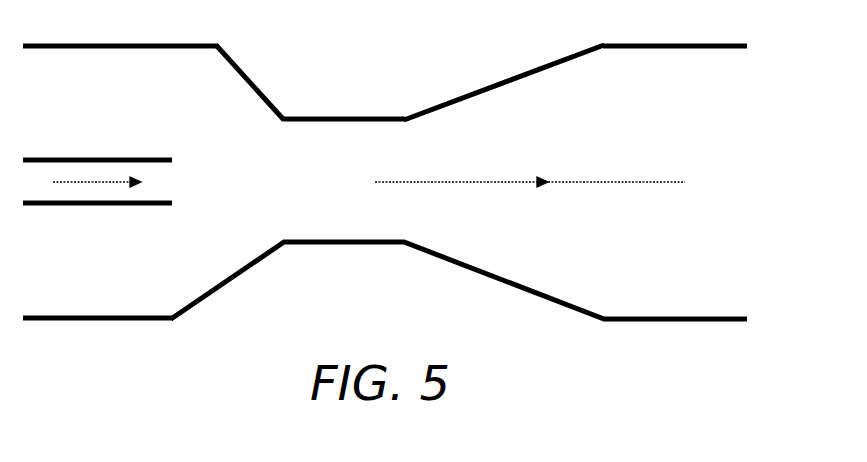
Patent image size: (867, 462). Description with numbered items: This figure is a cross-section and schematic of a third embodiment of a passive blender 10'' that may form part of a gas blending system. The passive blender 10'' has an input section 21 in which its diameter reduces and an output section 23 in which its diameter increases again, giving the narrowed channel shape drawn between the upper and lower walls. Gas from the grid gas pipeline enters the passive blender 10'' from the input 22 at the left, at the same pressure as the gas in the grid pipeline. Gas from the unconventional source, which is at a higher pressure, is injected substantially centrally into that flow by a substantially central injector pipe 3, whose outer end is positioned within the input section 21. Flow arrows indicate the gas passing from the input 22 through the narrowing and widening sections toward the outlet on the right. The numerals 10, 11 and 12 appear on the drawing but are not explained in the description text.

The central injector pipe 3 is at (57, 205).
The flow channel 10 is at (385, 182).
The passive blender 10'' is at (385, 182).
The bottom wall 11 is at (68, 320).
The top wall outlet section 12 is at (695, 46).
The input section 21 is at (250, 80).
The input 22 is at (62, 66).
The output section 23 is at (503, 82).